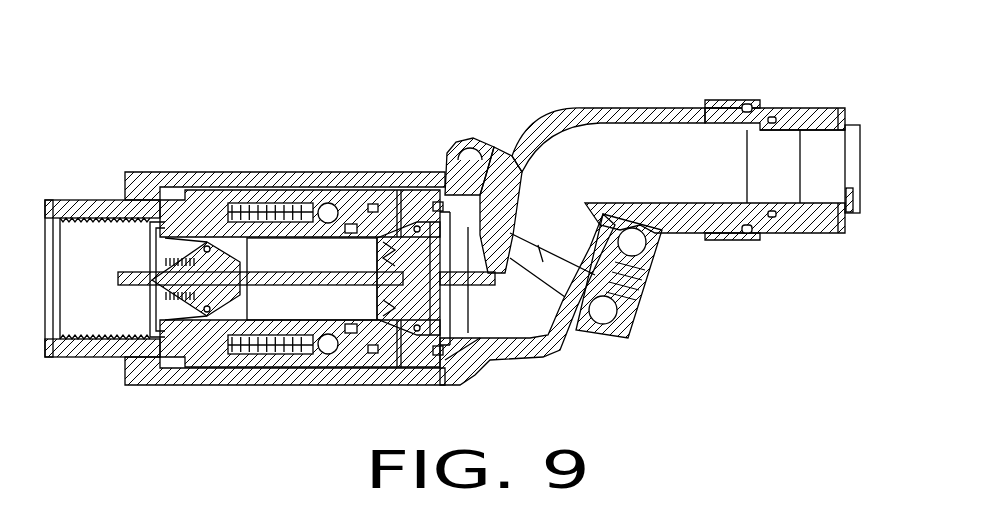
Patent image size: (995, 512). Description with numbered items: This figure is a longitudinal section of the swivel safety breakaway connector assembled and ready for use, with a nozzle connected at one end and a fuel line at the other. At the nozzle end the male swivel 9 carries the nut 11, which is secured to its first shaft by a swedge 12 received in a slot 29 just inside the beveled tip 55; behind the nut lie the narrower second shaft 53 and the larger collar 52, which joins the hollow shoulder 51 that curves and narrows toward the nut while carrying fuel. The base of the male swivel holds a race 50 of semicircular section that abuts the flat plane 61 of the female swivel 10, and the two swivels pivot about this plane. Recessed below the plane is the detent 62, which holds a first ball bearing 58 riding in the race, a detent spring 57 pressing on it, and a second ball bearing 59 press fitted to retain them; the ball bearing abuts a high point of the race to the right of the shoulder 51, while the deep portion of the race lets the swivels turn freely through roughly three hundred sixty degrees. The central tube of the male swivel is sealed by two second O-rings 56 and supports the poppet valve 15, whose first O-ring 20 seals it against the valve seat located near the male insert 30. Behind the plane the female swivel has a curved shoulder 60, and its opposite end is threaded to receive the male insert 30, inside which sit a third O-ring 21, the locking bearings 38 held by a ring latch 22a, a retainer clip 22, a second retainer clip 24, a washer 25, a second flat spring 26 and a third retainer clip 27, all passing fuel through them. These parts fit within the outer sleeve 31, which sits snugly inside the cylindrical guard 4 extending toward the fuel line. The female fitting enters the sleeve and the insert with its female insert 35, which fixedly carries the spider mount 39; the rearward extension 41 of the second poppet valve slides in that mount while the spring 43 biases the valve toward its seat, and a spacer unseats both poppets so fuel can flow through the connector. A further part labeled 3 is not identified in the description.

The valve body 3 is at (246, 367).
The cylindrical guard 4 is at (160, 172).
The male swivel 9 is at (706, 253).
The female swivel 10 is at (546, 358).
The nut 11 is at (790, 233).
The swedge 12 is at (852, 215).
The poppet valve 15 is at (370, 367).
The first O-ring 20 is at (417, 345).
The third O-ring 21 is at (352, 224).
The retainer clip 22 is at (322, 205).
The ring latch 22a is at (300, 360).
The second retainer clip 24 is at (290, 203).
The washer 25 is at (262, 203).
The second flat spring 26 is at (238, 190).
The third retainer clip 27 is at (212, 357).
The slot 29 is at (848, 120).
The male insert 30 is at (398, 190).
The outer sleeve 31 is at (372, 204).
The female insert 35 is at (110, 357).
The locking bearings 38 is at (323, 354).
The spider mount 39 is at (155, 357).
The rearward extension 41 is at (125, 288).
The spring 43 is at (125, 200).
The race 50 is at (470, 150).
The hollow shoulder 51 is at (612, 108).
The collar 52 is at (712, 100).
The second shaft 53 is at (812, 233).
The tip 55 is at (862, 125).
The second O-rings 56 is at (430, 202).
The detent spring 57 is at (635, 298).
The first ball bearing 58 is at (645, 258).
The second ball bearing 59 is at (618, 335).
The shoulder 60 is at (488, 362).
The plane 61 is at (492, 200).
The detent 62 is at (612, 342).